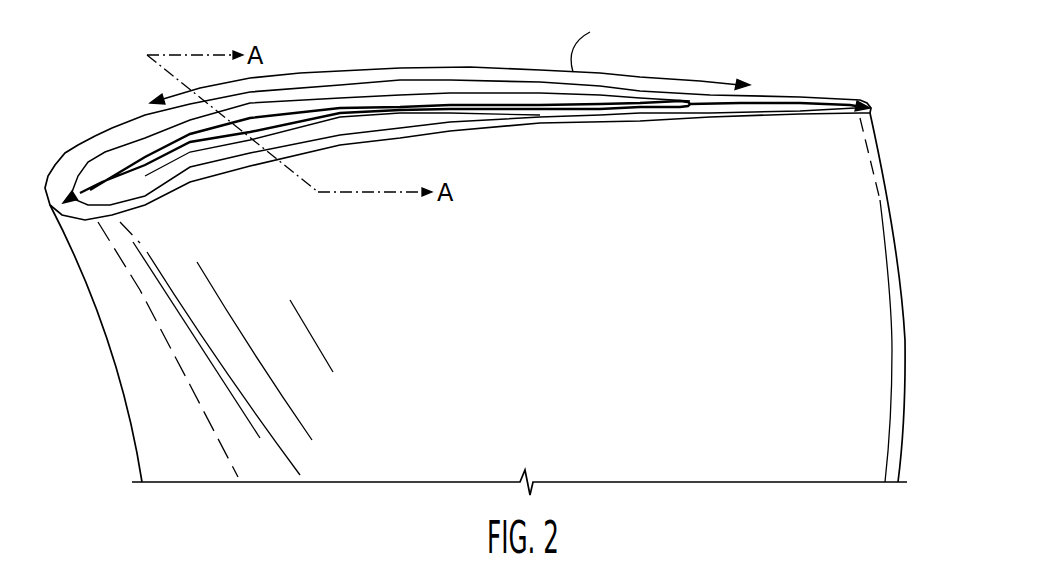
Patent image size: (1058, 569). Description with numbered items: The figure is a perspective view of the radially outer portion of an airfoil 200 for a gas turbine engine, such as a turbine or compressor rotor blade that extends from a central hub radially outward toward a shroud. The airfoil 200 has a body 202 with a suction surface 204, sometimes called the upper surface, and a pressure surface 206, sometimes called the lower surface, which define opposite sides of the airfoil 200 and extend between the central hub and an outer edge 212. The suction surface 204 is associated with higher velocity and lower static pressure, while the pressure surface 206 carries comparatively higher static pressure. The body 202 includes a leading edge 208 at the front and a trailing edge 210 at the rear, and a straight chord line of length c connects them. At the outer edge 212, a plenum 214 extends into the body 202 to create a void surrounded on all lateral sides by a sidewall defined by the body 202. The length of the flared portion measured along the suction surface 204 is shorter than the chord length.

The airfoil 200 is at (687, 52).
The body 202 is at (773, 442).
The suction surface 204 is at (522, 80).
The pressure surface 206 is at (208, 315).
The leading edge 208 is at (123, 397).
The trailing edge 210 is at (880, 127).
The outer edge 212 is at (380, 88).
The plenum 214 is at (143, 170).